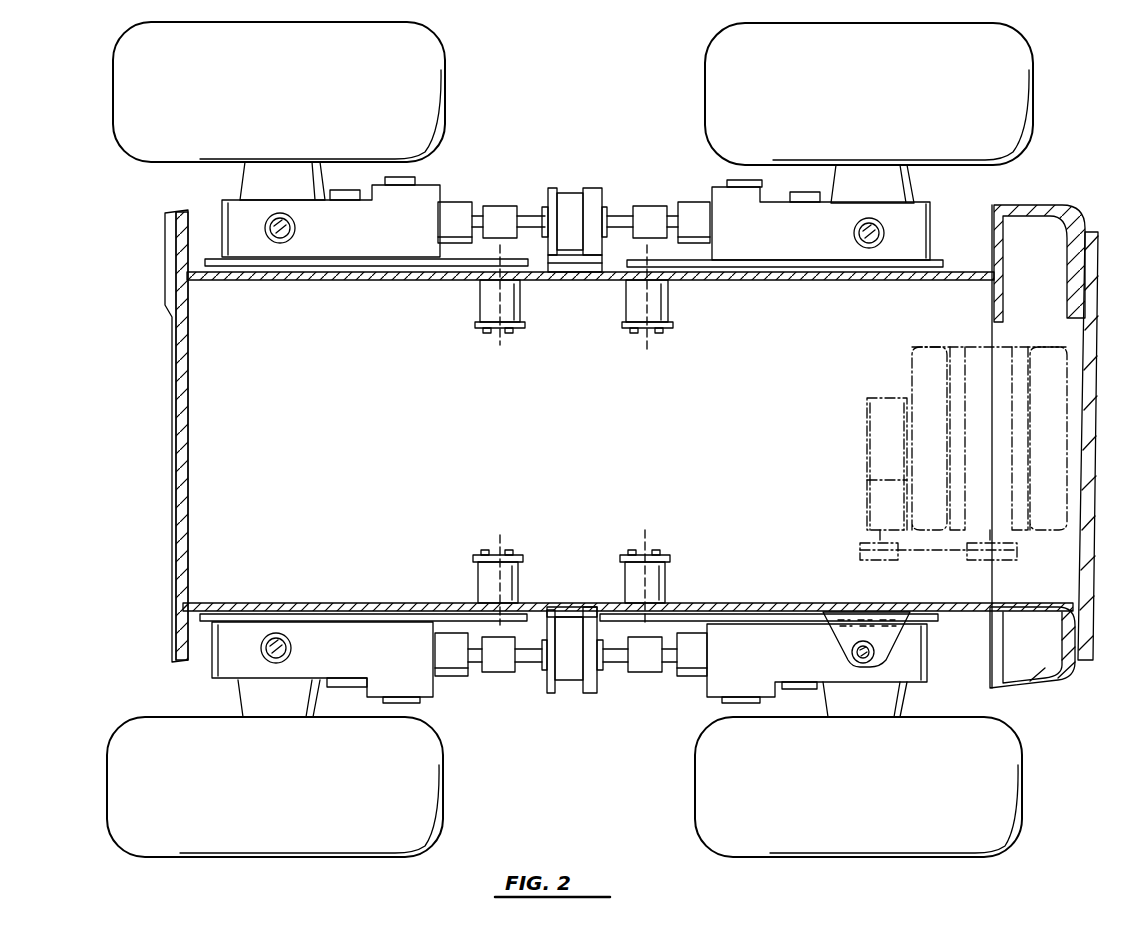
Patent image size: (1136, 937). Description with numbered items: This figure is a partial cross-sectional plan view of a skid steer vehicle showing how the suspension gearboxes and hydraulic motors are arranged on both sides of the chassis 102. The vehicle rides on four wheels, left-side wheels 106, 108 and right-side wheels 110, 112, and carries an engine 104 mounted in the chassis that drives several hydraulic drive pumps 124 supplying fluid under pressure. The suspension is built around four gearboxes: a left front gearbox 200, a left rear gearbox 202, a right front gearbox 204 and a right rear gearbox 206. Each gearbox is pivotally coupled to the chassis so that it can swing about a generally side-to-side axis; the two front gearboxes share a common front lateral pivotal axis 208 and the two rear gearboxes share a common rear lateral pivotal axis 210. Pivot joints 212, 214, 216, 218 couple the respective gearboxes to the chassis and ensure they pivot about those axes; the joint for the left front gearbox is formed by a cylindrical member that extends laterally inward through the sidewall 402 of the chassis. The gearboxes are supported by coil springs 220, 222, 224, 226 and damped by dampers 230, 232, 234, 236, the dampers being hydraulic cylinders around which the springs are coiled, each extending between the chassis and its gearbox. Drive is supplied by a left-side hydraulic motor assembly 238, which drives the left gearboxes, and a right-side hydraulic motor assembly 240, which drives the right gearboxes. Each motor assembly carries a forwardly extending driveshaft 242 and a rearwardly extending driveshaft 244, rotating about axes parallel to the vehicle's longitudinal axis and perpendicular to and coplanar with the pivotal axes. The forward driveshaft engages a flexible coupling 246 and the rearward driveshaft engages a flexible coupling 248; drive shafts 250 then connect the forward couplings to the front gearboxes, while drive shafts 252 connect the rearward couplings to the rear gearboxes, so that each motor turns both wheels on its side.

The chassis 102 is at (578, 449).
The engine 104 is at (958, 345).
The left-side wheel 106 is at (440, 823).
The left-side wheel 108 is at (1022, 793).
The right-side wheel 110 is at (447, 65).
The right-side wheel 112 is at (1032, 60).
The hydraulic drive pump 124 is at (866, 425).
The left front gearbox 200 is at (279, 632).
The left rear gearbox 202 is at (740, 633).
The right front gearbox 204 is at (291, 254).
The right rear gearbox 206 is at (852, 249).
The front lateral pivotal axis 208 is at (500, 345).
The rear lateral pivotal axis 210 is at (647, 352).
The pivot joint 212 is at (483, 570).
The pivot joint 214 is at (653, 578).
The pivot joint 216 is at (482, 310).
The pivot joint 218 is at (670, 317).
The spring 220 is at (208, 632).
The spring 222 is at (850, 622).
The spring 224 is at (219, 254).
The spring 226 is at (911, 249).
The damper 230 is at (262, 656).
The damper 232 is at (850, 652).
The damper 234 is at (268, 220).
The damper 236 is at (882, 228).
The hydraulic motor assembly 238 is at (568, 675).
The hydraulic motor assembly 240 is at (568, 195).
The forwardly extending driveshaft 242 is at (527, 215).
The rearwardly extending driveshaft 244 is at (612, 215).
The flexible coupling 246 is at (497, 208).
The flexible coupling 248 is at (652, 208).
The drive shaft 250 is at (462, 200).
The drive shaft 252 is at (686, 204).
The sidewall 402 is at (352, 278).